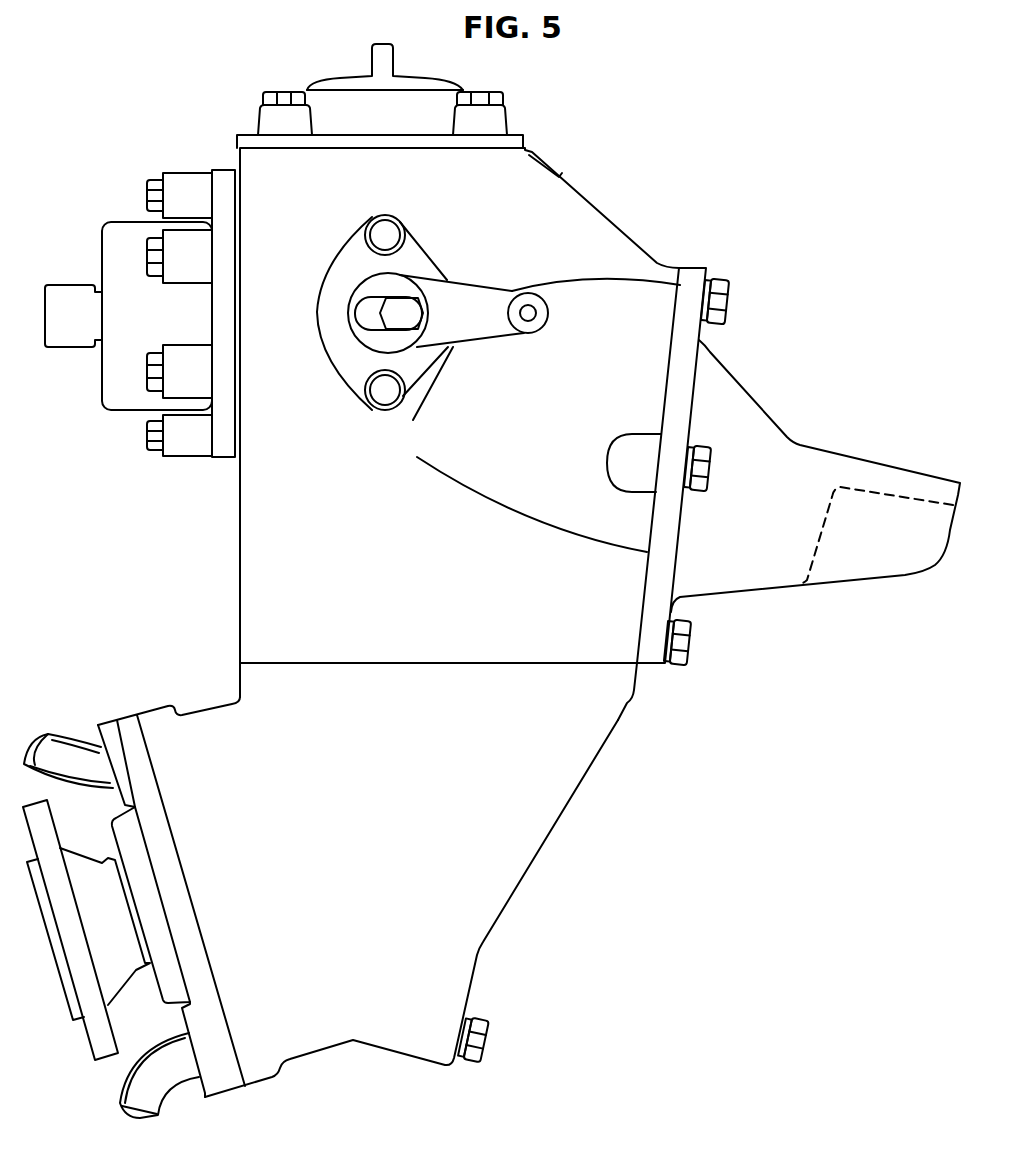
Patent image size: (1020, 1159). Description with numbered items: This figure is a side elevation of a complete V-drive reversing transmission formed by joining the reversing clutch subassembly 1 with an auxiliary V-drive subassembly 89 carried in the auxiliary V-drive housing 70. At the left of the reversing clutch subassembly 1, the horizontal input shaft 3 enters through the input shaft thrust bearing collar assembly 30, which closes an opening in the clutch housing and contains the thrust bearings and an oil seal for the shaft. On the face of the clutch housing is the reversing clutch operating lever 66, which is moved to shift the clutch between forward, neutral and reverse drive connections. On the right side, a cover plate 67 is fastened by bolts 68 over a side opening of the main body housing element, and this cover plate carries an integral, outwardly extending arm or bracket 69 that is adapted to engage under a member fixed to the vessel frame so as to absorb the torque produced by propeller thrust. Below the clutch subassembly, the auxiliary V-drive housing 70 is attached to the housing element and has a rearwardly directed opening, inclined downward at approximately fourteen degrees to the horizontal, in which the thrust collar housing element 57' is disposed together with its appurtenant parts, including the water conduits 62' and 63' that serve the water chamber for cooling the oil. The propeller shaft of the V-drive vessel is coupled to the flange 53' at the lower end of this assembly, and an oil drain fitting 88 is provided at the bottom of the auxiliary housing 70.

The reversing clutch subassembly 1 is at (597, 212).
The horizontal input shaft 3 is at (60, 286).
The input shaft thrust bearing collar assembly 30 is at (113, 222).
The reversing clutch operating lever 66 is at (482, 289).
The cover plate 67 is at (704, 329).
The bolts 68 is at (728, 301).
The arm or bracket 69 is at (767, 415).
The auxiliary V-drive housing 70 is at (628, 706).
The oil drain fitting 88 is at (486, 1040).
The auxiliary V-drive subassembly 89 is at (548, 843).
The thrust collar housing element 57' is at (151, 883).
The water conduit 62' is at (68, 744).
The flange 53' is at (86, 952).
The water conduit 63' is at (167, 1086).